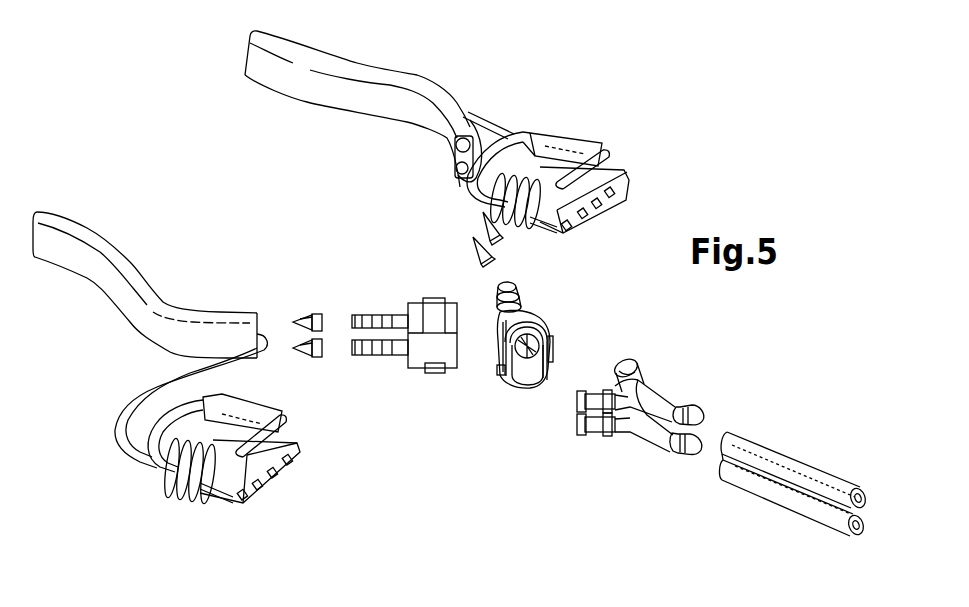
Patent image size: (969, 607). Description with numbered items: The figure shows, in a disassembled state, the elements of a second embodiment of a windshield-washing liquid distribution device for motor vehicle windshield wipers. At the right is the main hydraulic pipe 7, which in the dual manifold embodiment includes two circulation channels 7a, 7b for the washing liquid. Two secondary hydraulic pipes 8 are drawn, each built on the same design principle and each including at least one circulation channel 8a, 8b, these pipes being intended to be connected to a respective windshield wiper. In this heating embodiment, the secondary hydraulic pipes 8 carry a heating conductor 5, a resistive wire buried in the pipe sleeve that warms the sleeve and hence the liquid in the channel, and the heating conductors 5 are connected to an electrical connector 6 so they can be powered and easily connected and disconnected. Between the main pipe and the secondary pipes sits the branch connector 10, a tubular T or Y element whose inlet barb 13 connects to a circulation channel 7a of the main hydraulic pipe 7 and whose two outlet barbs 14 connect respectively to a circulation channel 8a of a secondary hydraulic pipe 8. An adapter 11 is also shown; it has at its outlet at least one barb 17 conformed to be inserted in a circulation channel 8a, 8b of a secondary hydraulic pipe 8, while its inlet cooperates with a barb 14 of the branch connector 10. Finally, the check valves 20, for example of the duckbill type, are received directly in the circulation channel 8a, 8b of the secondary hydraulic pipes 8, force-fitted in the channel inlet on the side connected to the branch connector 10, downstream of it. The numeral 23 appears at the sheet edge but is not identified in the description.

The heating conductor 5 is at (493, 124).
The electrical connector 6 is at (563, 147).
The main hydraulic pipe 7 is at (762, 447).
The circulation channel 7a is at (861, 491).
The circulation channel 7b is at (856, 535).
The secondary hydraulic pipe 8 is at (285, 52).
The circulation channel 8a is at (455, 146).
The circulation channel 8b is at (455, 171).
The branch connector 10 is at (650, 382).
The adapter 11 is at (436, 378).
The barb 13 is at (697, 417).
The barb 14 is at (620, 360).
The barb 17 is at (388, 356).
The check valve 20 is at (477, 250).
The sheet label 23 is at (627, 598).